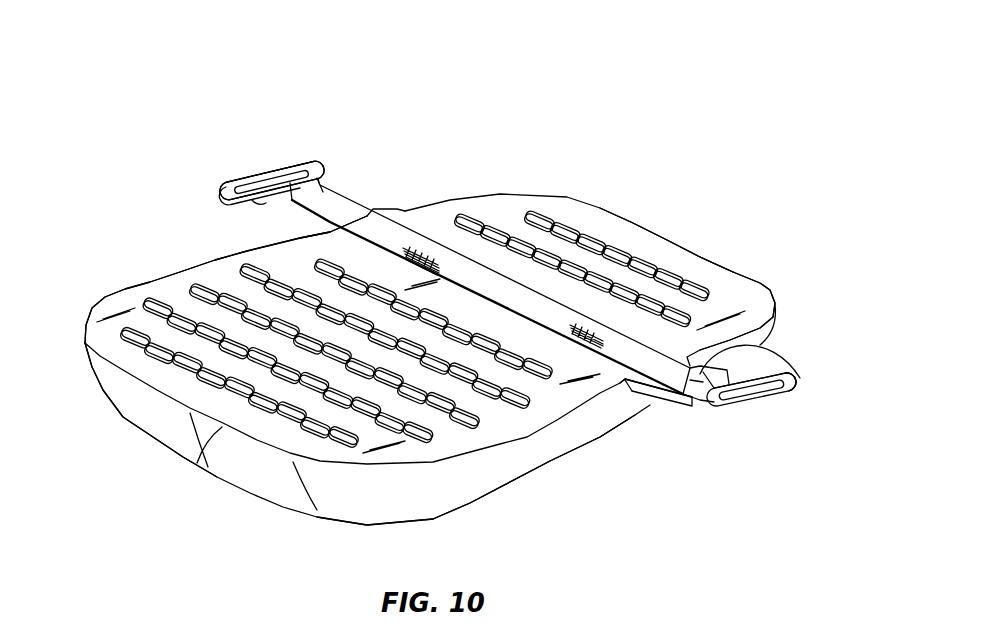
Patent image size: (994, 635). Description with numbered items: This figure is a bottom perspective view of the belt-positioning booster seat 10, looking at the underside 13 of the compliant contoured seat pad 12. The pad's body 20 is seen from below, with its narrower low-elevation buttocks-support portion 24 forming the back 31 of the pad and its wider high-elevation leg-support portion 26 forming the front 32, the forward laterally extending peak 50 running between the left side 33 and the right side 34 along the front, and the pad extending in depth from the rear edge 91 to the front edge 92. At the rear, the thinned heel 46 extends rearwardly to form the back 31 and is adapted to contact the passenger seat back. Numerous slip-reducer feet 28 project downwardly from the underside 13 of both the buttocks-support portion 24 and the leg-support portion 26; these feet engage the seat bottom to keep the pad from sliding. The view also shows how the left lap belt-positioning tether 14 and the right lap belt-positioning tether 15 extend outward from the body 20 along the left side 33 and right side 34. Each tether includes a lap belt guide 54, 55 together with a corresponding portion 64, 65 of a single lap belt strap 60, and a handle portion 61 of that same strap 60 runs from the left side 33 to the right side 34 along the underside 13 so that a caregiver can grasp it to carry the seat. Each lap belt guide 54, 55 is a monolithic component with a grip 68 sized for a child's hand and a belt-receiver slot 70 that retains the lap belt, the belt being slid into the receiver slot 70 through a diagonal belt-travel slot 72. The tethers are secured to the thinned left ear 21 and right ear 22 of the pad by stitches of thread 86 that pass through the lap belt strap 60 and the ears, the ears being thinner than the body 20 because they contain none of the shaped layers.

The belt-positioning booster seat 10 is at (637, 97).
The compliant contoured seat pad 12 is at (483, 190).
The underside 13 is at (713, 287).
The left lap belt-positioning tether 14 is at (784, 356).
The right lap belt-positioning tether 15 is at (335, 160).
The body 20 is at (270, 504).
The left ear 21 is at (633, 406).
The right ear 22 is at (312, 238).
The low-elevation buttocks-support portion 24 is at (648, 414).
The high-elevation leg-support portion 26 is at (482, 509).
The slip-reducer feet 28 is at (518, 228).
The back 31 is at (680, 230).
The front 32 is at (167, 418).
The left side 33 is at (578, 433).
The right side 34 is at (397, 216).
The thinned heel 46 is at (772, 307).
The forward laterally extending peak 50 is at (384, 527).
The lap belt guide 54 is at (796, 372).
The lap belt guide 55 is at (304, 153).
The lap belt strap 60 is at (415, 230).
The handle portion 61 is at (437, 236).
The portion of lap belt strap 64 is at (679, 400).
The portion of lap belt strap 65 is at (300, 223).
The grip 68 is at (282, 160).
The belt-receiver slot 70 is at (267, 171).
The diagonal belt-travel slot 72 is at (248, 203).
The stitches of thread 86 is at (402, 256).
The rear edge 91 is at (703, 252).
The front edge 92 is at (204, 461).